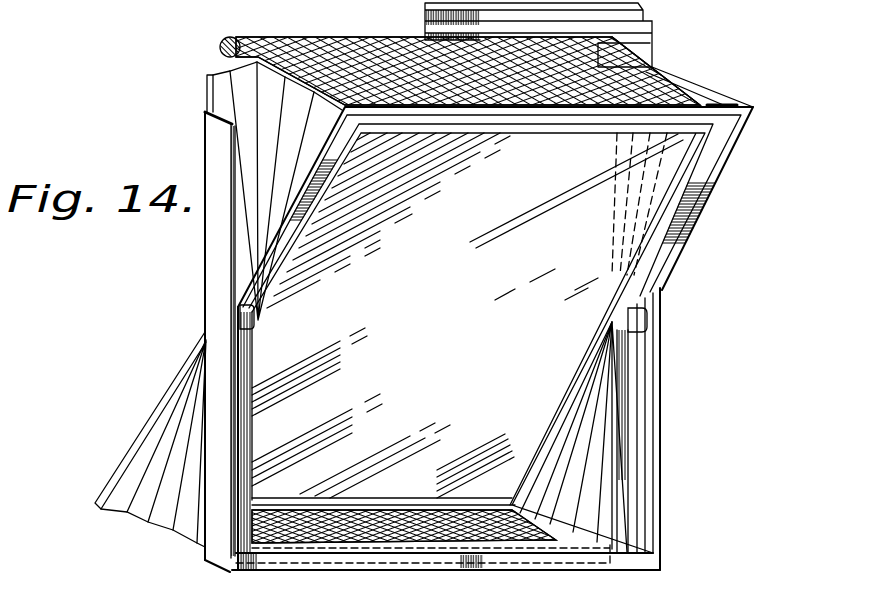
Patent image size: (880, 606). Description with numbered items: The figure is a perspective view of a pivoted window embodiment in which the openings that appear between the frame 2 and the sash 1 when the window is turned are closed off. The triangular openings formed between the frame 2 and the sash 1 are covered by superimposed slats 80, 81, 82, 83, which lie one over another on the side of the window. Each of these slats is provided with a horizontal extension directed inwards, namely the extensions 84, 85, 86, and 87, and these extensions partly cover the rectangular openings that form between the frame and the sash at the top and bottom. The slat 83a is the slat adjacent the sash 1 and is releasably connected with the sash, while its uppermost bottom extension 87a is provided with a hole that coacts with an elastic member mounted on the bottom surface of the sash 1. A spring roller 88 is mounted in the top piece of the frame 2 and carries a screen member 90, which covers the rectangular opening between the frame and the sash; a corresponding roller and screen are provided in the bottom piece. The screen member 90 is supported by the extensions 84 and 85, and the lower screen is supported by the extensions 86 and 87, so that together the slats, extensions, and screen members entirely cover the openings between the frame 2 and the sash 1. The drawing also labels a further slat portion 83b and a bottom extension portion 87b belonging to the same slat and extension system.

The sash 1 is at (668, 252).
The frame 2 is at (217, 355).
The slat 80 is at (247, 210).
The slat 81 is at (702, 189).
The slat 82 is at (134, 473).
The slat 83 is at (583, 453).
The slat adjacent the sash 83a is at (672, 487).
The bellows fold 83b is at (550, 470).
The horizontal extension 84 is at (298, 77).
The horizontal extension 85 is at (693, 92).
The horizontal extension 86 is at (202, 545).
The horizontal bottom extension 87 is at (540, 573).
The uppermost extension 87a is at (470, 507).
The bottom channel 87b is at (518, 513).
The spring roller 88 is at (218, 48).
The screen member 90 is at (374, 52).